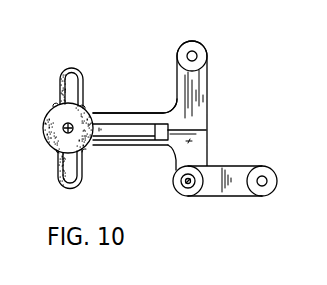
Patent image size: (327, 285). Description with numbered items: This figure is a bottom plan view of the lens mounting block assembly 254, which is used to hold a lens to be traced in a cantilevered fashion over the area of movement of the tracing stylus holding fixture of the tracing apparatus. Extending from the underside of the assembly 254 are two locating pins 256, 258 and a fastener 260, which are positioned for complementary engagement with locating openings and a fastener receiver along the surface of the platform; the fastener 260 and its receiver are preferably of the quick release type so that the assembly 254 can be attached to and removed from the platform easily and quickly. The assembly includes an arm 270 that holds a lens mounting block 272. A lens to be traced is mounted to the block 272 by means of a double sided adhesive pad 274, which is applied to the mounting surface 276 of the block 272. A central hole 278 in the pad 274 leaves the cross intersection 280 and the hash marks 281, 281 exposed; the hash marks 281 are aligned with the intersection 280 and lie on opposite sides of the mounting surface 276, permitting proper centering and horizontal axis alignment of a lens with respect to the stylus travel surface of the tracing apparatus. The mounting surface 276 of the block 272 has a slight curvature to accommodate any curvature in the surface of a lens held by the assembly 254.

The lens mounting block assembly 254 is at (234, 97).
The locating pin 256 is at (190, 52).
The locating pin 258 is at (266, 183).
The fastener 260 is at (198, 188).
The arm 270 is at (122, 113).
The lens mounting block 272 is at (93, 144).
The double sided adhesive pad 274 is at (73, 92).
The mounting surface 276 is at (55, 111).
The central hole 278 is at (63, 128).
The cross intersection 280 is at (66, 131).
The hash marks 281 is at (72, 71).